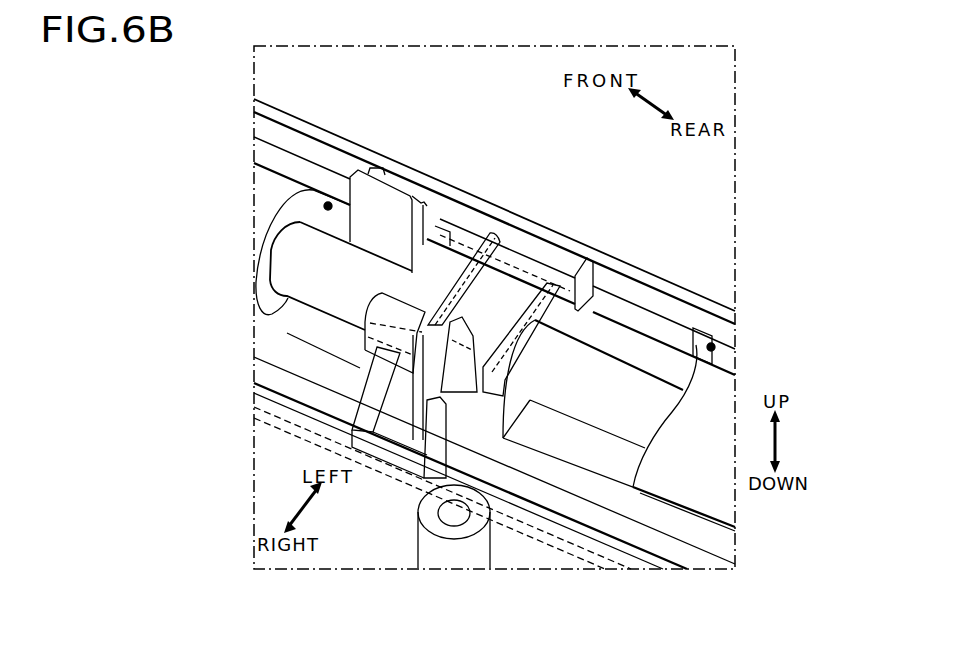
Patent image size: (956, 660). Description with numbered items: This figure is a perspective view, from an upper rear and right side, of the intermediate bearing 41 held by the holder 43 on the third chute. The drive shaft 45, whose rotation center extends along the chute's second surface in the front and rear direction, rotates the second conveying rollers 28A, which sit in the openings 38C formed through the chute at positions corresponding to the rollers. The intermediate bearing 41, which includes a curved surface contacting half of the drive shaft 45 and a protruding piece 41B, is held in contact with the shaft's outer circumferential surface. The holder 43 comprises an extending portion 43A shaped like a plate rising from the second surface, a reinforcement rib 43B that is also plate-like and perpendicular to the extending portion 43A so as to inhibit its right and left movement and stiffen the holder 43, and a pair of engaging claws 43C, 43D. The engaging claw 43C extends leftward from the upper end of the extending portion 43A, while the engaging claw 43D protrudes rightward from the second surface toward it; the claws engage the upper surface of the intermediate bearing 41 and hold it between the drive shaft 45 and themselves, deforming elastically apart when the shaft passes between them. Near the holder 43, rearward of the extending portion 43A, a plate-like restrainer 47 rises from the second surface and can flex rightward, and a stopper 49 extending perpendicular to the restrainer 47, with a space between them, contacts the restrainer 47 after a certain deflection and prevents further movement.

The second conveying roller 28A is at (278, 198).
The opening 38C is at (328, 203).
The drive shaft 45 is at (362, 276).
The engaging claw 43D is at (450, 238).
The protruding piece 41B is at (462, 285).
The intermediate bearing 41 is at (523, 283).
The engaging claw 43C is at (395, 316).
The extending portion 43A is at (362, 350).
The reinforcement rib 43B is at (366, 412).
The holder 43 is at (313, 459).
The stopper 49 is at (440, 447).
The restrainer 47 is at (467, 390).